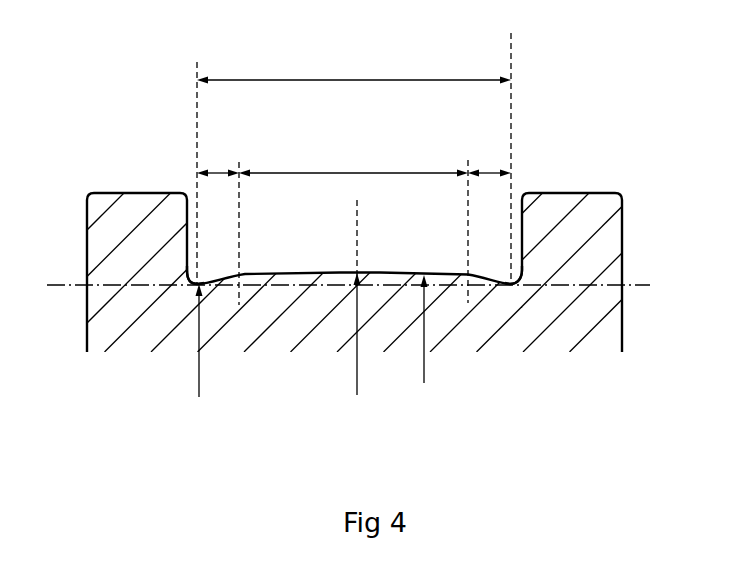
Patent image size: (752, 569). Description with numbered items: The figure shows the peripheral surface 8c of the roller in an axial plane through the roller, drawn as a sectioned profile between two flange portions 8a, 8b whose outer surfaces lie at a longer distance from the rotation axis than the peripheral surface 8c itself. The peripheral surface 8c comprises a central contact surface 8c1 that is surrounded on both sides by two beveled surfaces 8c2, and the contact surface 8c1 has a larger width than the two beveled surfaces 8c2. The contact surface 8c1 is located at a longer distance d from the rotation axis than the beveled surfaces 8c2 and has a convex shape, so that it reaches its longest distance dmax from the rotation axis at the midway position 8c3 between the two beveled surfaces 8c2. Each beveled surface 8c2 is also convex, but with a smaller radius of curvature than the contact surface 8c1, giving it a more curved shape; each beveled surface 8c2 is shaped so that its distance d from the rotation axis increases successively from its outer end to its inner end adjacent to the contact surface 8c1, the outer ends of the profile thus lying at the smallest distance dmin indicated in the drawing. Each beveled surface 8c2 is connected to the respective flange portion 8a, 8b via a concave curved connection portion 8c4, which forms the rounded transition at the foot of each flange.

The flange portion 8a is at (120, 217).
The flange portion 8b is at (588, 215).
The peripheral surface 8c is at (425, 80).
The contact surface 8c1 is at (357, 173).
The beveled surfaces 8c2 is at (220, 173).
The midway position 8c3 is at (355, 242).
The concave curved connection portions 8c4 is at (189, 285).
The minimum groove diameter dmin is at (198, 365).
The longest distance dmax is at (355, 372).
The distance d is at (422, 365).